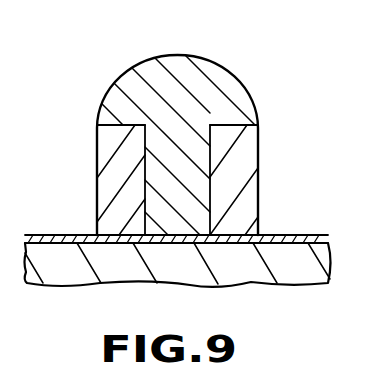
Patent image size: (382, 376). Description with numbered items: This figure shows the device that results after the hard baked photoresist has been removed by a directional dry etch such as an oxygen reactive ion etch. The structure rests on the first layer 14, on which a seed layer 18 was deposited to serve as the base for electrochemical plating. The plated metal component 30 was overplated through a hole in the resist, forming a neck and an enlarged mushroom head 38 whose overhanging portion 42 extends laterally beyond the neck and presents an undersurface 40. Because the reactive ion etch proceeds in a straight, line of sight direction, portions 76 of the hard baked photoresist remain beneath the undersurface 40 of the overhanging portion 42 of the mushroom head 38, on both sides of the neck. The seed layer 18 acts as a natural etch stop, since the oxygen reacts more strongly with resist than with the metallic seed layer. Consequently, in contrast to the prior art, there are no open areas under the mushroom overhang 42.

The first layer 14 is at (332, 268).
The seed layer 18 is at (331, 241).
The plated metal component 30 is at (148, 58).
The mushroom head 38 is at (189, 73).
The undersurface 40 is at (108, 128).
The overhanging portion 42 is at (118, 101).
The remaining portions of hard baked photoresist 76 is at (101, 207).